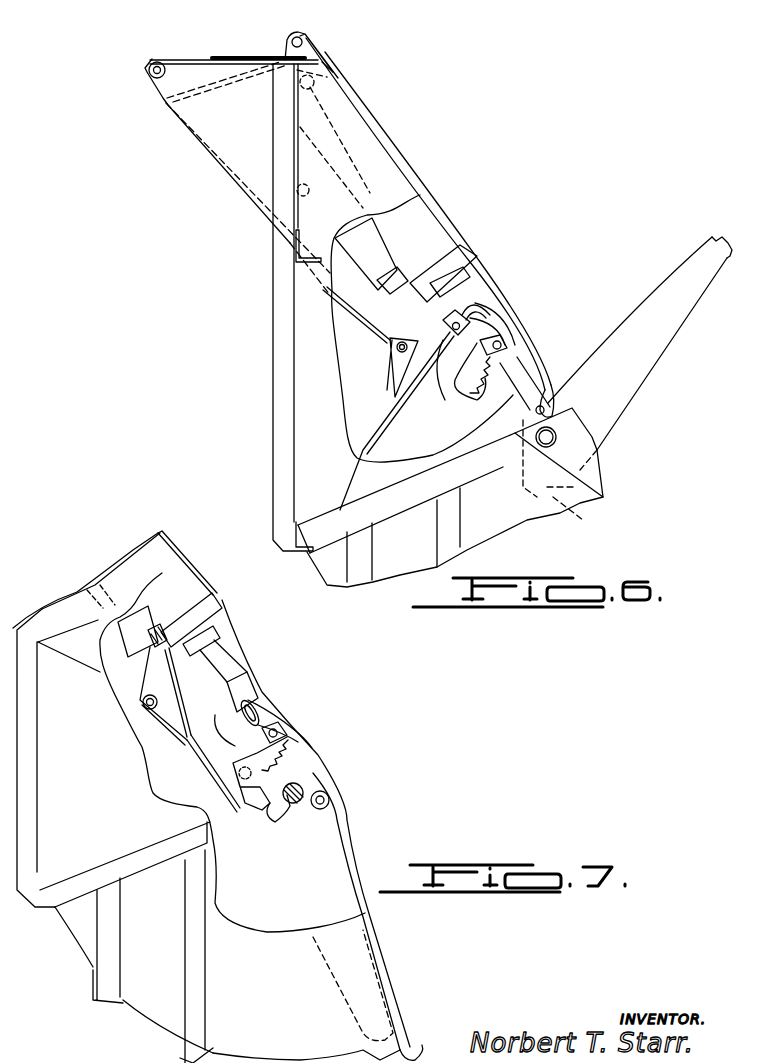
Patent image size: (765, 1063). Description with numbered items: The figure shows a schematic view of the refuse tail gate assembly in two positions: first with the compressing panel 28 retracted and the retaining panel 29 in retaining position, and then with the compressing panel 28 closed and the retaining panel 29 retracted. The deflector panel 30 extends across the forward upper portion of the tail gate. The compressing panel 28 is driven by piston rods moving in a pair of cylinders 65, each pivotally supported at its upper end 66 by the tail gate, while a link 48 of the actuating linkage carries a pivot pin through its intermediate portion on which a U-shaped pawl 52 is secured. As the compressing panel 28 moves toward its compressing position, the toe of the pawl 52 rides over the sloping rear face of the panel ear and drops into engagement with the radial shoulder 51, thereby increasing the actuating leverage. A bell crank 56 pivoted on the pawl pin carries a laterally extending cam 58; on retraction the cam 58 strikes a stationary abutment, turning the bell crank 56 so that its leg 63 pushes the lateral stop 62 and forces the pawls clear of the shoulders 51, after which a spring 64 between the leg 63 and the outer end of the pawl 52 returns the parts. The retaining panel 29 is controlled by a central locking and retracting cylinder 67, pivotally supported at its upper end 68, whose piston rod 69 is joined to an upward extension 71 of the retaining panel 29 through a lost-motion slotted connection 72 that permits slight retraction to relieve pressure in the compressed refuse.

In FIG. 6, the compressing panel 28 is at (643, 302).
In FIG. 7, the compressing panel 28 is at (292, 912).
In FIG. 6, the retaining panel 29 is at (378, 450).
In FIG. 7, the retaining panel 29 is at (213, 778).
In FIG. 6, the deflector panel 30 is at (342, 340).
In FIG. 6, the link 48 is at (550, 377).
In FIG. 7, the link 48 is at (312, 770).
In FIG. 6, the radial shoulder 51 is at (566, 476).
In FIG. 6, the pawl 52 is at (456, 397).
In FIG. 7, the pawl 52 is at (215, 712).
In FIG. 6, the bell crank 56 is at (500, 316).
In FIG. 7, the bell crank 56 is at (276, 702).
In FIG. 6, the cam 58 is at (492, 307).
In FIG. 7, the cam 58 is at (262, 696).
In FIG. 6, the lateral stop 62 is at (509, 333).
In FIG. 7, the lateral stop 62 is at (288, 726).
In FIG. 6, the leg 63 is at (508, 347).
In FIG. 7, the leg 63 is at (293, 748).
In FIG. 6, the spring 64 is at (483, 398).
In FIG. 7, the spring 64 is at (281, 812).
In FIG. 6, the cylinder 65 is at (422, 200).
In FIG. 7, the cylinder 65 is at (196, 582).
In FIG. 6, the upper end 66 is at (336, 86).
In FIG. 6, the locking and retracting cylinder 67 is at (348, 250).
In FIG. 7, the locking and retracting cylinder 67 is at (110, 612).
In FIG. 6, the upper end 68 is at (296, 186).
In FIG. 6, the piston rod 69 is at (415, 300).
In FIG. 6, the upward extension 71 is at (432, 385).
In FIG. 7, the upward extension 71 is at (240, 660).
In FIG. 6, the slotted connection 72 is at (465, 302).
In FIG. 7, the slotted connection 72 is at (150, 646).